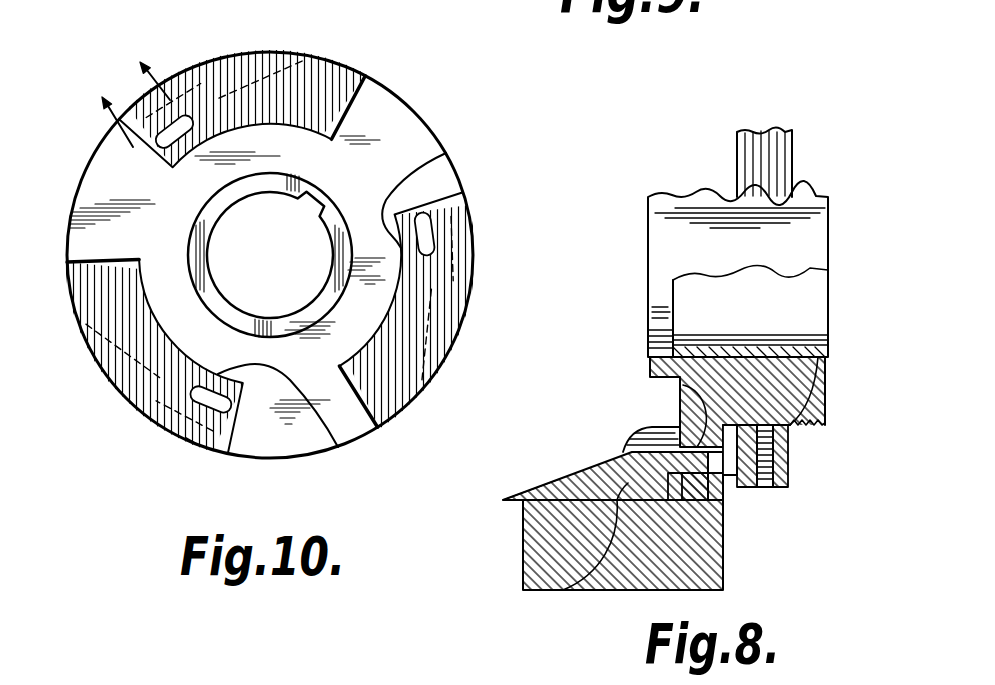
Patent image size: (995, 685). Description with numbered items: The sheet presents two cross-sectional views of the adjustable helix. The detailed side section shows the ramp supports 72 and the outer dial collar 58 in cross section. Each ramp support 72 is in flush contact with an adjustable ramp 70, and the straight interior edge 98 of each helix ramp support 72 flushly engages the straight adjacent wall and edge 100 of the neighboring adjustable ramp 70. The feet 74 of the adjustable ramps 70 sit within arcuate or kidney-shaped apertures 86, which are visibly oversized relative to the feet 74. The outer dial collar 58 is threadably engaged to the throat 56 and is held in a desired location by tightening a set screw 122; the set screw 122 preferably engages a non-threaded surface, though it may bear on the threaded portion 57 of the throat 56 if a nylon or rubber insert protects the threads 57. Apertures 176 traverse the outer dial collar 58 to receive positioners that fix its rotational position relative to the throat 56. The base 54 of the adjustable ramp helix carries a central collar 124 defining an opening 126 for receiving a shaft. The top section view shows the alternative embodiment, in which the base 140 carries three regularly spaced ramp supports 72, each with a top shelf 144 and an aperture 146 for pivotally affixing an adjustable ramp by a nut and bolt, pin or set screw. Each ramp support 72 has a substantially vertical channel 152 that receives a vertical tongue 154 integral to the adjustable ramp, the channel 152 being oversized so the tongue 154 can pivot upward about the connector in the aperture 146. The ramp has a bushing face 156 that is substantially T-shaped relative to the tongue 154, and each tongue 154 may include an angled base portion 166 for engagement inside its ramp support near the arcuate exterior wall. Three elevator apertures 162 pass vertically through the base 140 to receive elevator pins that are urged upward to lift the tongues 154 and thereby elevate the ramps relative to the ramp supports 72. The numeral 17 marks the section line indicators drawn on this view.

In FIG. 10, the section line for FIG. 17 is at (120, 90).
In FIG. 10, the base 140 is at (408, 132).
In FIG. 10, the top shelf 144 is at (466, 200).
In FIG. 10, the aperture 146 is at (448, 213).
In FIG. 10, the vertical channel 152 is at (447, 153).
In FIG. 10, the vertical tongue 154 is at (190, 443).
In FIG. 10, the bushing face 156 is at (222, 78).
In FIG. 10, the elevator aperture 162 is at (362, 62).
In FIG. 10, the angled base portion 166 is at (296, 66).
In FIG. 8, the base 54 is at (700, 415).
In FIG. 8, the throat 56 is at (826, 362).
In FIG. 8, the threaded portion 57 is at (745, 150).
In FIG. 8, the outer dial collar 58 is at (788, 453).
In FIG. 8, the adjustable ramp 70 is at (598, 465).
In FIG. 8, the ramp support 72 is at (523, 525).
In FIG. 8, the foot 74 is at (723, 502).
In FIG. 8, the kidney-shaped aperture 86 is at (683, 405).
In FIG. 8, the straight interior edge 98 is at (563, 590).
In FIG. 8, the straight adjacent wall and edge 100 is at (560, 497).
In FIG. 8, the set screw 122 is at (768, 488).
In FIG. 8, the central collar 124 is at (650, 372).
In FIG. 8, the opening 126 is at (690, 236).
In FIG. 8, the aperture 176 is at (790, 440).